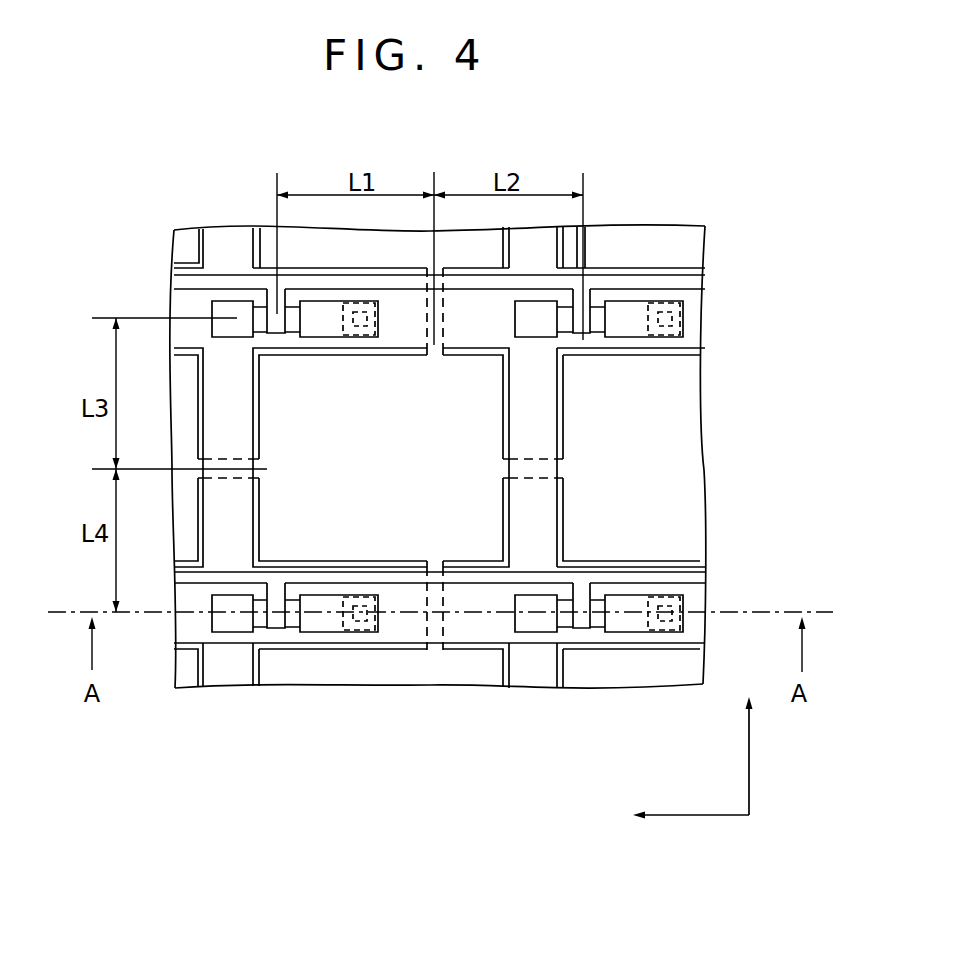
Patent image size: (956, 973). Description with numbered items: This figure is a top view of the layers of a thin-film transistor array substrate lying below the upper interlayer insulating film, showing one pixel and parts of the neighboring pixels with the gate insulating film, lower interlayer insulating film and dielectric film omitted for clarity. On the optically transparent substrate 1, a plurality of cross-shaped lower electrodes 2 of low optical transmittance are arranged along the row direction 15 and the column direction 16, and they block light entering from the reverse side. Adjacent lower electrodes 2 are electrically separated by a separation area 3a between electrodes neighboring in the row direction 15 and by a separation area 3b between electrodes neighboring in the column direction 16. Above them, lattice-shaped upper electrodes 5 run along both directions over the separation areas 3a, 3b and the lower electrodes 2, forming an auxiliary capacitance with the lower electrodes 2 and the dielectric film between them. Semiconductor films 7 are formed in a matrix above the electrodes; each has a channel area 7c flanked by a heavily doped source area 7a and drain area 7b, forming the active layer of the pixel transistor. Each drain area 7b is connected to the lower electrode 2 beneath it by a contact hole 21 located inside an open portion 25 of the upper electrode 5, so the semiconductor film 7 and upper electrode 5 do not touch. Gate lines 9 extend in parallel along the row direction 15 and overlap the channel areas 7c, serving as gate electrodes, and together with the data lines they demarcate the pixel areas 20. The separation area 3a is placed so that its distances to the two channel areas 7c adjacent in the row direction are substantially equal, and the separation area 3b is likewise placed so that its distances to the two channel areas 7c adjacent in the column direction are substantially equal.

The optically transparent substrate 1 is at (667, 667).
The lower electrode 2 is at (257, 235).
The separation area 3a is at (435, 266).
The separation area 3b is at (175, 470).
The upper electrode 5 is at (230, 670).
The semiconductor film 7 is at (395, 467).
The source area 7a is at (223, 620).
The drain area 7b is at (327, 618).
The channel area 7c is at (273, 637).
The gate line 9 is at (685, 287).
The row direction 15 is at (695, 815).
The column direction 16 is at (750, 752).
The pixel area 20 is at (470, 427).
The contact hole 21 is at (688, 316).
The open portion 25 is at (690, 336).